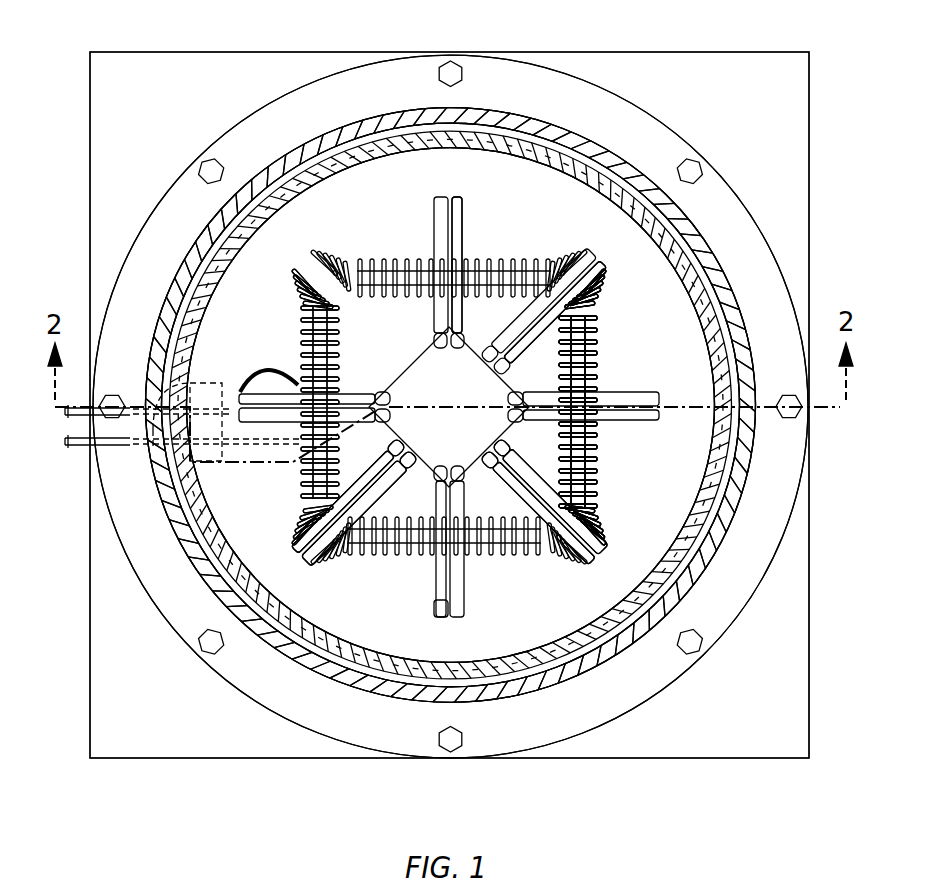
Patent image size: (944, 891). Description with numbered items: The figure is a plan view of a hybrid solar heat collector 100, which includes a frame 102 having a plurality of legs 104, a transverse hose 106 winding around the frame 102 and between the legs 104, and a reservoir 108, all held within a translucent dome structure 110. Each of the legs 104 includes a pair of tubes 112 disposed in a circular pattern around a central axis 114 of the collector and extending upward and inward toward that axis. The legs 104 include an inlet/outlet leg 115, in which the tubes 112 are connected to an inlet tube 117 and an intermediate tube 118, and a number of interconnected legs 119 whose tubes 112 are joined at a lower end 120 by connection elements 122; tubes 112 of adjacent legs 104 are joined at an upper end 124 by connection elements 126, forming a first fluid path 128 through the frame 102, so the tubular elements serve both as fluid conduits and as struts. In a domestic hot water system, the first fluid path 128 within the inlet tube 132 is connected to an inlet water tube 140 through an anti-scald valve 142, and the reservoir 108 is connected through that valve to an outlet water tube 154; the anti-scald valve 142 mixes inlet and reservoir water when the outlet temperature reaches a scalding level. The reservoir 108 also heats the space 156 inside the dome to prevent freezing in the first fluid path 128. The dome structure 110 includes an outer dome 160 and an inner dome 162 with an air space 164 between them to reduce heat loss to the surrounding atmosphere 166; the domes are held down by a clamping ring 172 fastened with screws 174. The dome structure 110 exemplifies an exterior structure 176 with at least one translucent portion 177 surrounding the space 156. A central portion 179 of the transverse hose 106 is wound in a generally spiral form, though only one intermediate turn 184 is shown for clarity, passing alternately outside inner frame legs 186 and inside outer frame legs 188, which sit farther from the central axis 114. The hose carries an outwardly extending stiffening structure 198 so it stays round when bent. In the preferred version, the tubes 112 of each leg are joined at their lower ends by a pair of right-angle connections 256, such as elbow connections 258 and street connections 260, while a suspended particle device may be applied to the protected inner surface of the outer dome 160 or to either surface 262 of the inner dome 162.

The hybrid solar heat collector 100 is at (199, 806).
The frame 102 is at (458, 410).
The legs 104 is at (476, 555).
The transverse hose 106 is at (448, 244).
The reservoir 108 is at (449, 407).
The translucent dome structure 110 is at (330, 103).
The tubes 112 is at (612, 406).
The central axis 114 is at (499, 382).
The inlet/outlet leg 115 is at (298, 414).
The inlet tube 117 is at (173, 348).
The intermediate tube 118 is at (299, 368).
The interconnected legs 119 is at (607, 420).
The lower end 120 is at (614, 406).
The connection elements 122 is at (544, 520).
The upper end 124 is at (536, 502).
The connection elements 126 is at (359, 502).
The first fluid path 128 is at (544, 281).
The inlet tube 132 is at (300, 386).
The inlet water tube 140 is at (82, 420).
The anti-scald valve 142 is at (240, 470).
The outlet water tube 154 is at (95, 450).
The space 156 is at (649, 264).
The outer dome 160 is at (300, 141).
The inner dome 162 is at (193, 278).
The air space 164 is at (168, 327).
The surrounding atmosphere 166 is at (876, 179).
The clamping ring 172 is at (130, 573).
The screws 174 is at (210, 657).
The exterior structure 176 is at (640, 160).
The translucent portion 177 is at (717, 257).
The central portion 179 is at (477, 247).
The intermediate turns 184 is at (615, 406).
The inner frame legs 186 is at (544, 285).
The outer frame legs 188 is at (425, 255).
The stiffening structure 198 is at (615, 406).
The right-angle connections 256 is at (354, 516).
The elbow connections 258 is at (457, 629).
The street connections 260 is at (593, 157).
The surface of the inner dome 262 is at (460, 150).